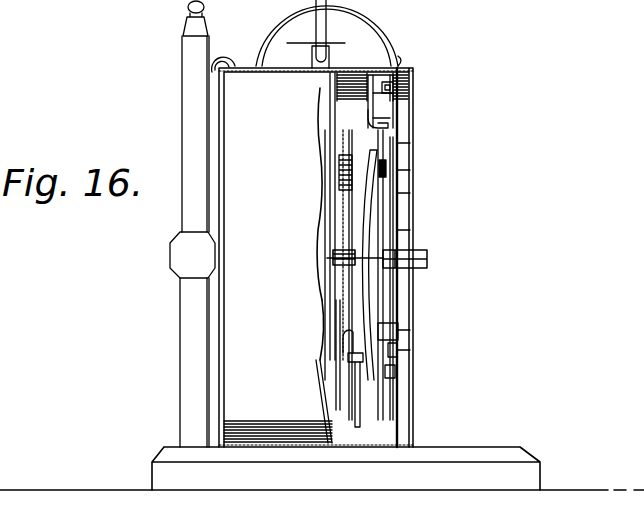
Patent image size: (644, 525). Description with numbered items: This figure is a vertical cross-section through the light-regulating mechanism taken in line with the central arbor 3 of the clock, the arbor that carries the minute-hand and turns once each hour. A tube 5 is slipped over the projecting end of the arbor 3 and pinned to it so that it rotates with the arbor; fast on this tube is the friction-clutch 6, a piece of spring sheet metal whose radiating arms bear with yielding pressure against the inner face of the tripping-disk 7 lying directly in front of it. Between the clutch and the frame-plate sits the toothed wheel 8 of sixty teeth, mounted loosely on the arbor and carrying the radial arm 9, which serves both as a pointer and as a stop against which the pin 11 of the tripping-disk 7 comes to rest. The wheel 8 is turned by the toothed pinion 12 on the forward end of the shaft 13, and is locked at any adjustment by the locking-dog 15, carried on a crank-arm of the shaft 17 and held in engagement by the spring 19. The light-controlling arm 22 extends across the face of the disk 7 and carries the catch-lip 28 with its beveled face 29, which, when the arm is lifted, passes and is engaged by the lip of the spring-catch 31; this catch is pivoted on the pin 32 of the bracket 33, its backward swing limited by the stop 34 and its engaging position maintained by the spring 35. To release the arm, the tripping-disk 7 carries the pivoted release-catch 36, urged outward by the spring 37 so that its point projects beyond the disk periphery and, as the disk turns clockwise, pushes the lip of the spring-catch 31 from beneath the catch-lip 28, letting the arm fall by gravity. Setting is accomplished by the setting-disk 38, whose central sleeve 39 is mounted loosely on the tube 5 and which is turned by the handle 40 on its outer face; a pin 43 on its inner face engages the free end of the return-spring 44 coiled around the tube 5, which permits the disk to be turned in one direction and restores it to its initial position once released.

The arbor 3 is at (320, 256).
The tube 5 is at (370, 264).
The friction-clutch 6 is at (336, 228).
The tripping-disk 7 is at (384, 193).
The toothed wheel 8 is at (330, 201).
The arm 9 is at (340, 392).
The pin 11 is at (385, 354).
The toothed pinion 12 is at (343, 153).
The shaft 13 is at (339, 172).
The locking-dog 15 is at (328, 351).
The shaft 17 is at (320, 362).
The spring 19 is at (323, 311).
The light-controlling arm 22 is at (387, 170).
The catch-lip 28 is at (398, 143).
The beveled face 29 is at (383, 128).
The spring-catch 31 is at (410, 84).
The pin 32 is at (397, 66).
The bracket 33 is at (337, 92).
The stop 34 is at (335, 108).
The spring 35 is at (410, 97).
The release-catch 36 is at (377, 360).
The spring 37 is at (390, 374).
The setting-disk 38 is at (400, 208).
The central sleeve 39 is at (428, 260).
The handle 40 is at (398, 349).
The pin 43 is at (398, 331).
The return-spring 44 is at (400, 230).